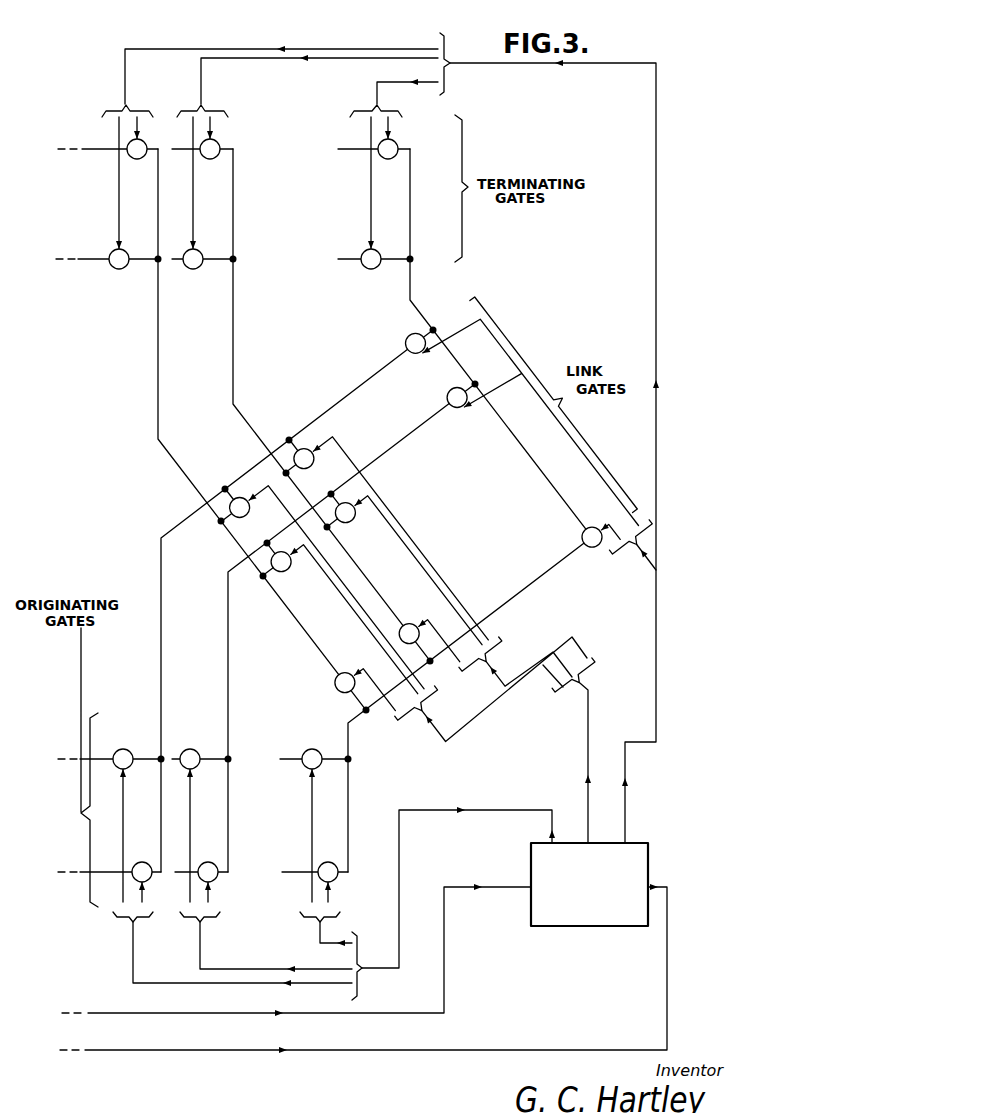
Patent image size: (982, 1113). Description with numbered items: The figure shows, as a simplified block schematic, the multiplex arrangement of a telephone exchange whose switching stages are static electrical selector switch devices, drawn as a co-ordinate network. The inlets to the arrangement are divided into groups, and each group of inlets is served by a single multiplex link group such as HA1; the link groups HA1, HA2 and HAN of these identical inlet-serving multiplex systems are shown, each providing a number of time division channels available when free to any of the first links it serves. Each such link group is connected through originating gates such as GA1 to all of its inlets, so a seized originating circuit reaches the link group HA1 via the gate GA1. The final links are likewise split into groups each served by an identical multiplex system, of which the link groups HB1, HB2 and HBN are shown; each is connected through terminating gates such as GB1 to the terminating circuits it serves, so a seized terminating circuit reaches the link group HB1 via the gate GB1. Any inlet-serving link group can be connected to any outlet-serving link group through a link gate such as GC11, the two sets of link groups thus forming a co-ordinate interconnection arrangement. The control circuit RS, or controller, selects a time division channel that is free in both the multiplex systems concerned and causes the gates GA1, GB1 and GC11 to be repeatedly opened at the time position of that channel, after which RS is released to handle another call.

The gate GB1 is at (107, 203).
The link group HB1 is at (158, 370).
The link group HB2 is at (233, 353).
The link group HBN is at (500, 343).
The gate GC11 is at (233, 500).
The link group HA1 is at (161, 668).
The link group HA2 is at (228, 668).
The link group HAN is at (469, 704).
The gate GA1 is at (109, 819).
The control circuit RS is at (589, 884).